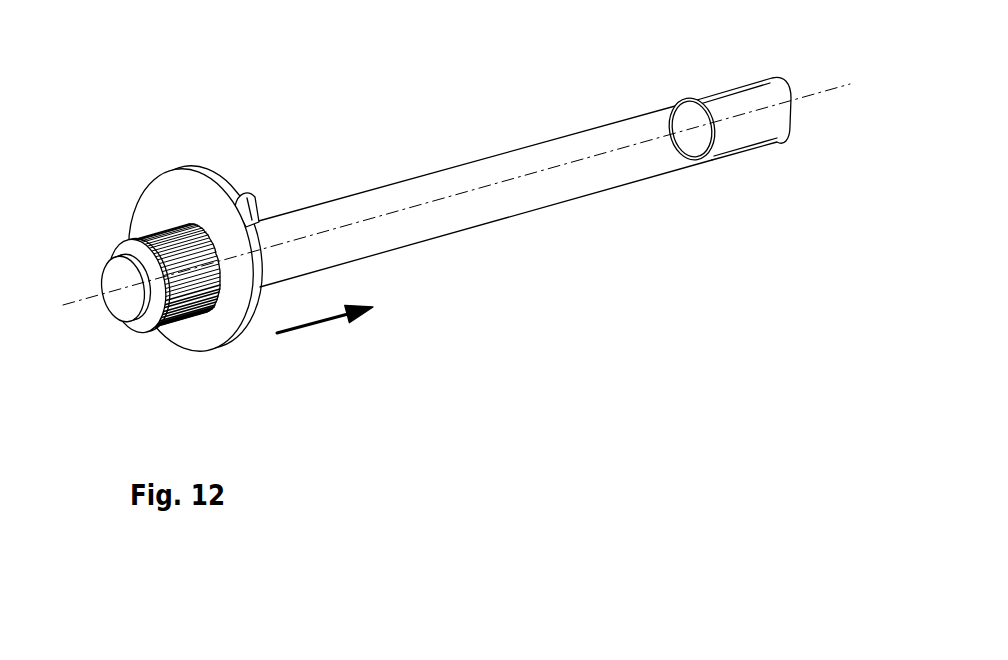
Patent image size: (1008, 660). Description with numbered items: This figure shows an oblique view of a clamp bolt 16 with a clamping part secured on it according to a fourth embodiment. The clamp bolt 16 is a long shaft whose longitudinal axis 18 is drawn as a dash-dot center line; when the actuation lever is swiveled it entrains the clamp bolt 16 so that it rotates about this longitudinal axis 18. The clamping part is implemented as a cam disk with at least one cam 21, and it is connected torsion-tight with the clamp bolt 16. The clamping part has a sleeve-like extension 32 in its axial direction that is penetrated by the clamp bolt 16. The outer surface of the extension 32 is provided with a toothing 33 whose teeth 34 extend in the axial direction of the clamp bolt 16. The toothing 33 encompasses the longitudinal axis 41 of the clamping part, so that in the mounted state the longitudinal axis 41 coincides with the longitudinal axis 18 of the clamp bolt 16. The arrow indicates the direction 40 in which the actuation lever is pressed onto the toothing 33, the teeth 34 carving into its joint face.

The clamp bolt 16 is at (497, 163).
The longitudinal axis 18 is at (823, 92).
The cam 21 is at (248, 204).
The sleeve-like extension 32 is at (185, 297).
The toothing 33 is at (198, 222).
The teeth 34 is at (147, 233).
The direction 40 is at (313, 330).
The longitudinal axis 41 is at (122, 293).